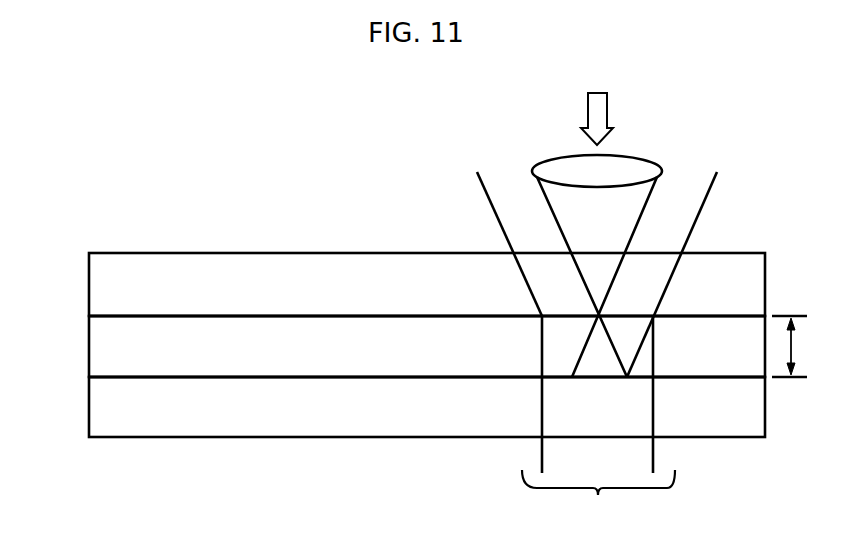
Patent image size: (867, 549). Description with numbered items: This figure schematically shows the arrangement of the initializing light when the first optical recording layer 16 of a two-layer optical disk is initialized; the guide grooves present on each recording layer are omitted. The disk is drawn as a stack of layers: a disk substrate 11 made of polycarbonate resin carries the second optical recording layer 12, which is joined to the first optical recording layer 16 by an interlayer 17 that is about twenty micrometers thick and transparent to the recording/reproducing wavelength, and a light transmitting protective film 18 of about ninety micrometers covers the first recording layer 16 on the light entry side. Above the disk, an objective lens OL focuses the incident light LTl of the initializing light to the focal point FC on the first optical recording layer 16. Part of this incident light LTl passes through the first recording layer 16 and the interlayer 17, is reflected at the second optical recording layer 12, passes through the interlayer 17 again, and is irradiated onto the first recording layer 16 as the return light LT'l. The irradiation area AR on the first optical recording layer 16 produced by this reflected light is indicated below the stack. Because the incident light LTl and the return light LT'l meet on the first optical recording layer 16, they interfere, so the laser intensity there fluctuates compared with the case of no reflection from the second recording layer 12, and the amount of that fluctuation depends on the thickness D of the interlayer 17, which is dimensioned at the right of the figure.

The light transmitting protective film 18 is at (104, 272).
The first optical recording layer 16 is at (105, 316).
The interlayer 17 is at (104, 332).
The second optical recording layer 12 is at (107, 377).
The disk substrate 11 is at (104, 410).
The objective lens OL is at (630, 168).
The incident light LTl is at (537, 195).
The return light LT'l is at (455, 232).
The focal point FC is at (599, 316).
The thickness of the interlayer D is at (795, 346).
The first optical recording layer irradiation area AR is at (598, 421).